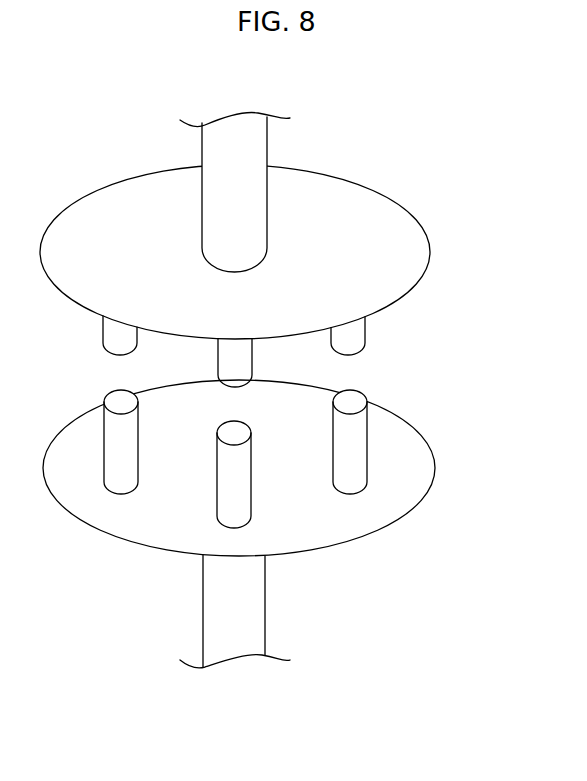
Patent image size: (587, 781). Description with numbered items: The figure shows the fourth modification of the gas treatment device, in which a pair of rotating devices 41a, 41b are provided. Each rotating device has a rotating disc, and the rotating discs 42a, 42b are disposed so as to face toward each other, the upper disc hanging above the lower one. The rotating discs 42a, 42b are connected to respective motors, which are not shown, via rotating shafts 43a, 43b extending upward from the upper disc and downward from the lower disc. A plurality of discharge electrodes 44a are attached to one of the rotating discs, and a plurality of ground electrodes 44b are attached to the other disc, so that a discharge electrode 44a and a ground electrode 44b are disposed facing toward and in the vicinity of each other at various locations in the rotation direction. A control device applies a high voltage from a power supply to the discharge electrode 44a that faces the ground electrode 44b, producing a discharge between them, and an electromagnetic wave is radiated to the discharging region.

The rotating device 41a is at (276, 250).
The rotating disc 42a is at (400, 240).
The rotating shaft 43a is at (255, 146).
The discharge electrodes 44a is at (353, 336).
The rotating device 41b is at (278, 524).
The rotating disc 42b is at (402, 463).
The rotating shaft 43b is at (245, 607).
The ground electrodes 44b is at (353, 428).